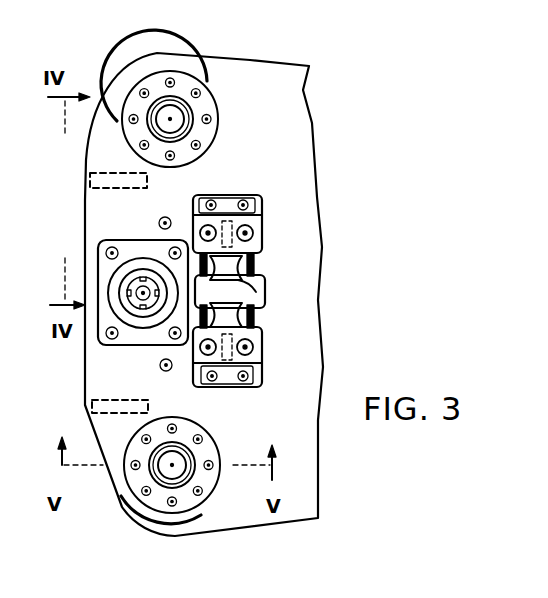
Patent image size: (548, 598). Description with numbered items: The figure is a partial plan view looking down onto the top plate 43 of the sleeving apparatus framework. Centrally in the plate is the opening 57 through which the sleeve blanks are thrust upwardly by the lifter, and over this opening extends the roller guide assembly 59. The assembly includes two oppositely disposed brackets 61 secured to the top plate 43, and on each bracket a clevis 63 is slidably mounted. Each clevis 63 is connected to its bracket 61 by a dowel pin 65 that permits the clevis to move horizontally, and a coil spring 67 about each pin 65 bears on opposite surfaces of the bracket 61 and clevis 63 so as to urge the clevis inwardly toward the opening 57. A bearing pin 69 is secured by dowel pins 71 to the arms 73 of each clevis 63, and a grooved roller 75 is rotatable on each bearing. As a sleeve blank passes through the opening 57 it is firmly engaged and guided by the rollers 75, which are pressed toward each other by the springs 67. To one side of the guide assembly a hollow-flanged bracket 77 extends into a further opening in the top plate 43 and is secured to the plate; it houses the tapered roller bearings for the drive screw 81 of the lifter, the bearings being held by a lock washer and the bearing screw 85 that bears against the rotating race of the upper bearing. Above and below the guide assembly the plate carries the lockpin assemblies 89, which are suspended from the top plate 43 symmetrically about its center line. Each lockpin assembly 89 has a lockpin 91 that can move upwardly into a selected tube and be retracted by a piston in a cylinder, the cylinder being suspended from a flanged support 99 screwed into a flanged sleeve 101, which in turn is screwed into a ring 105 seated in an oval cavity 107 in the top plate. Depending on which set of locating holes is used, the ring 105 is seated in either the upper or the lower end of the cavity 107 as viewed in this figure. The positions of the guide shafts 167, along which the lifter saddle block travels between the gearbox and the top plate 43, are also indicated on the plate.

The top plate 43 is at (306, 91).
The oval cavity 107 is at (173, 66).
The flanged sleeve 101 is at (214, 123).
The ring 105 is at (207, 432).
The lockpin assembly 89 is at (150, 471).
The flanged support 99 is at (168, 484).
The lockpin 91 is at (168, 456).
The hollow-flanged bracket 77 is at (102, 272).
The drive screw 81 is at (132, 272).
The bearing screw 85 is at (142, 288).
The shafts 167 is at (159, 365).
The roller guide assembly 59 is at (288, 266).
The clevis 63 is at (298, 207).
The coil spring 67 is at (222, 195).
The arms 73 is at (262, 244).
The dowel pins 71 is at (258, 264).
The opening 57 is at (264, 278).
The grooved rollers 75 is at (242, 284).
The bearing pin 69 is at (258, 321).
The dowel pin 65 is at (263, 362).
The brackets 61 is at (258, 384).